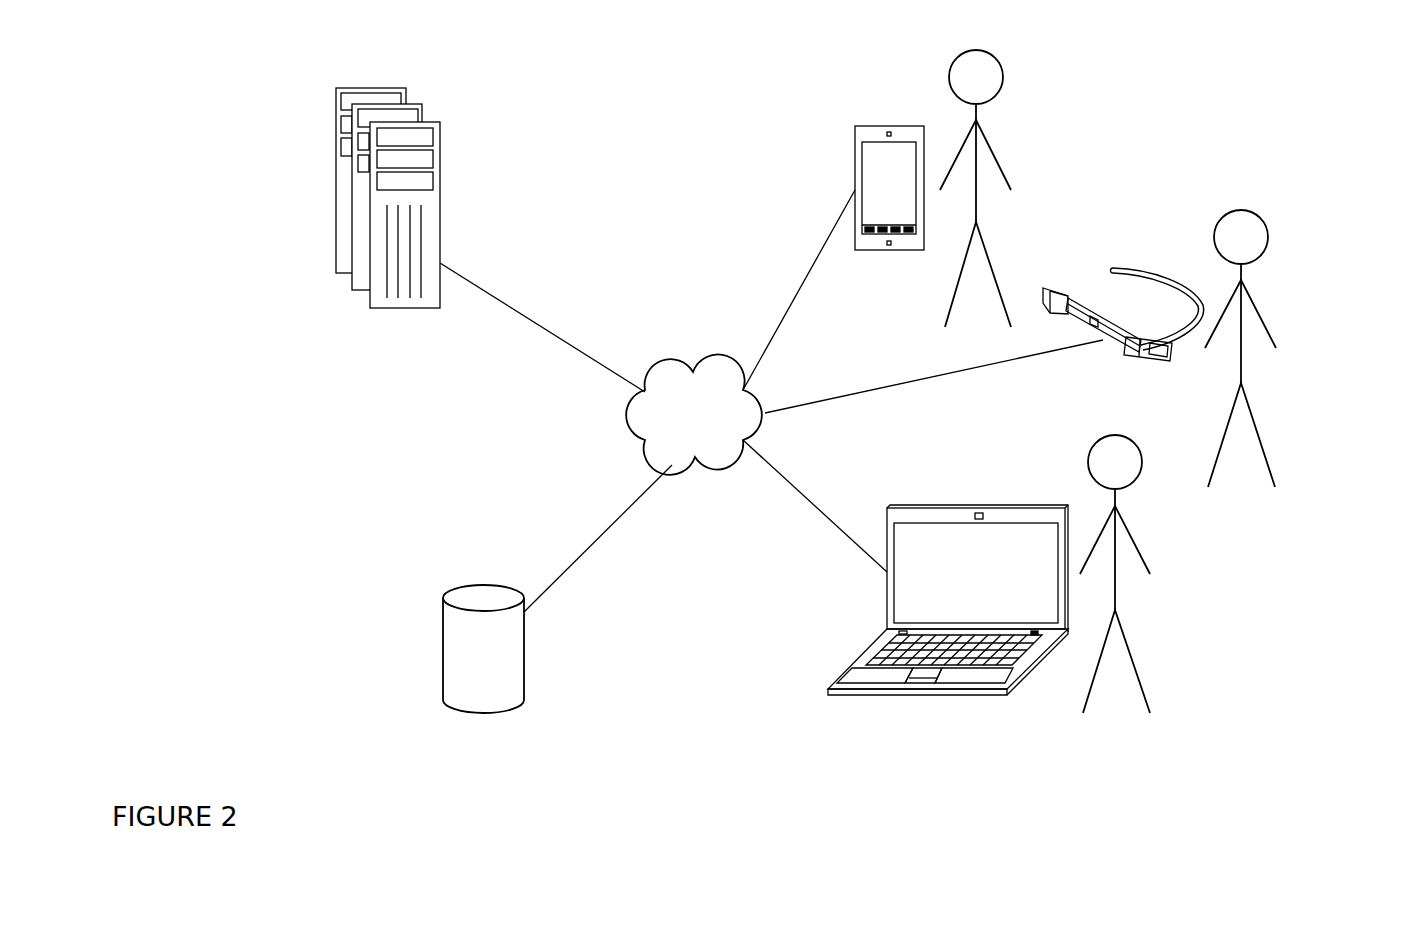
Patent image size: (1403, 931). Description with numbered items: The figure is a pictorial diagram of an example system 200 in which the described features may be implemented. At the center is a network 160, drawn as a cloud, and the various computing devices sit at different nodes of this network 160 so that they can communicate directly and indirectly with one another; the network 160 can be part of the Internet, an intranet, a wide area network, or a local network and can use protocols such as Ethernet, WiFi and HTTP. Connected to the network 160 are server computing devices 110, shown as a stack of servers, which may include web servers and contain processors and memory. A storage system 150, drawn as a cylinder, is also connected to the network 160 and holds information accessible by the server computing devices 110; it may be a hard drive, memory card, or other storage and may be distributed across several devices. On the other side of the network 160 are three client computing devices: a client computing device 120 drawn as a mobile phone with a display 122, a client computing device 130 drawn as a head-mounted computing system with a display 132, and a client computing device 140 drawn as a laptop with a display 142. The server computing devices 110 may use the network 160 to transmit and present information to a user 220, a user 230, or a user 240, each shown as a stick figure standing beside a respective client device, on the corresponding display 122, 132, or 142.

The server computing device 110 is at (440, 167).
The client computing device 120 is at (837, 188).
The display 122 is at (862, 185).
The client computing device 130 is at (1123, 308).
The display 132 is at (1163, 352).
The client computing device 140 is at (924, 600).
The display 142 is at (894, 612).
The storage system 150 is at (524, 668).
The network 160 is at (694, 414).
The system 200 is at (192, 774).
The user 220 is at (1010, 183).
The user 230 is at (1268, 337).
The user 240 is at (1143, 563).